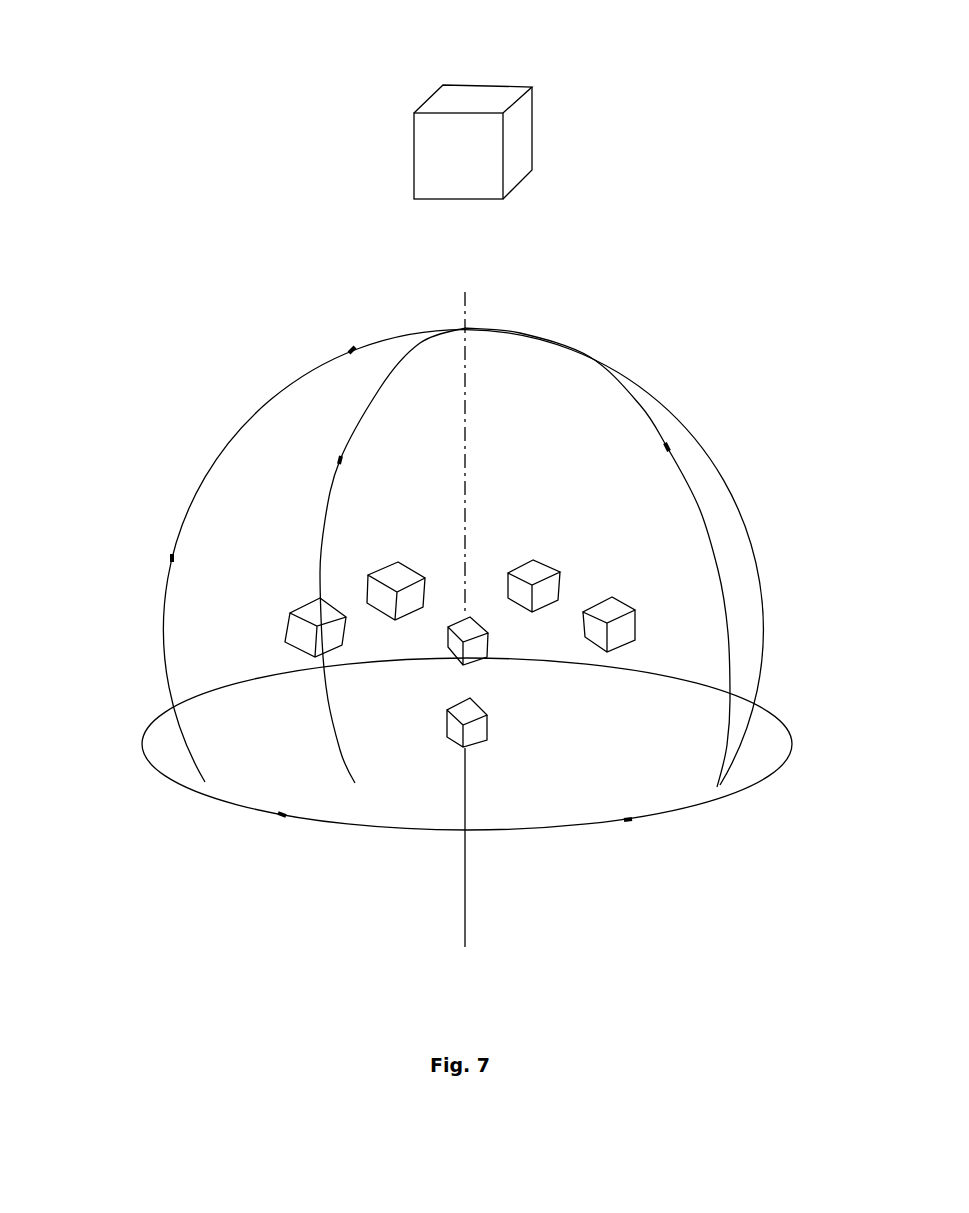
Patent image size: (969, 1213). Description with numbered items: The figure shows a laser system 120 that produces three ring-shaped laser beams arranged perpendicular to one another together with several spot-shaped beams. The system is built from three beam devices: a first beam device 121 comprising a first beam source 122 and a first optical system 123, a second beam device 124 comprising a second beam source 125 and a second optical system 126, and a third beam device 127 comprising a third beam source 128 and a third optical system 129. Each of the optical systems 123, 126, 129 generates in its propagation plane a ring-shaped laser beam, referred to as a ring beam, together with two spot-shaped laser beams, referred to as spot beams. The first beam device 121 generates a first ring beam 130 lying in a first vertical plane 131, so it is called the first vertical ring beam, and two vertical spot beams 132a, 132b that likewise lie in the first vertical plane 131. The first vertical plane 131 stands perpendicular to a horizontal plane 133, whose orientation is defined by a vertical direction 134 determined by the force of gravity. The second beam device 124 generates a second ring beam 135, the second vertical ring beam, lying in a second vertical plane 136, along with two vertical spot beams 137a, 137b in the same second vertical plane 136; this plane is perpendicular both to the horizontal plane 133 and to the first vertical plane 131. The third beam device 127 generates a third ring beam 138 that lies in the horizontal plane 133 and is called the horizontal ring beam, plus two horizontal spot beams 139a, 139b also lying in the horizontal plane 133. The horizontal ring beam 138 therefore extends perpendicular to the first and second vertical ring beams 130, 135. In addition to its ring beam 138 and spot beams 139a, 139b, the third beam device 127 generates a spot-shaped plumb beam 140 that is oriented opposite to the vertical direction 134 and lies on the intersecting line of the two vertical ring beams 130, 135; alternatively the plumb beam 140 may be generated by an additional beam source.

The laser system 120 is at (688, 305).
The first beam device 121 is at (325, 574).
The first beam source 122 is at (310, 610).
The first optical system 123 is at (395, 580).
The second beam device 124 is at (590, 577).
The second beam source 125 is at (610, 606).
The second optical system 126 is at (535, 572).
The third beam device 127 is at (519, 686).
The third beam source 128 is at (475, 650).
The third optical system 129 is at (475, 730).
The first ring beam 130 is at (212, 462).
The first vertical plane 131 is at (516, 136).
The vertical spot beam 132a is at (172, 558).
The vertical spot beam 132b is at (352, 348).
The horizontal plane 133 is at (472, 100).
The vertical direction 134 is at (463, 418).
The second ring beam 135 is at (710, 545).
The second vertical plane 136 is at (512, 134).
The vertical spot beam 137a is at (340, 460).
The vertical spot beam 137b is at (669, 447).
The third ring beam 138 is at (141, 742).
The horizontal spot beam 139a is at (282, 815).
The horizontal spot beam 139b is at (628, 821).
The plumb beam 140 is at (465, 868).